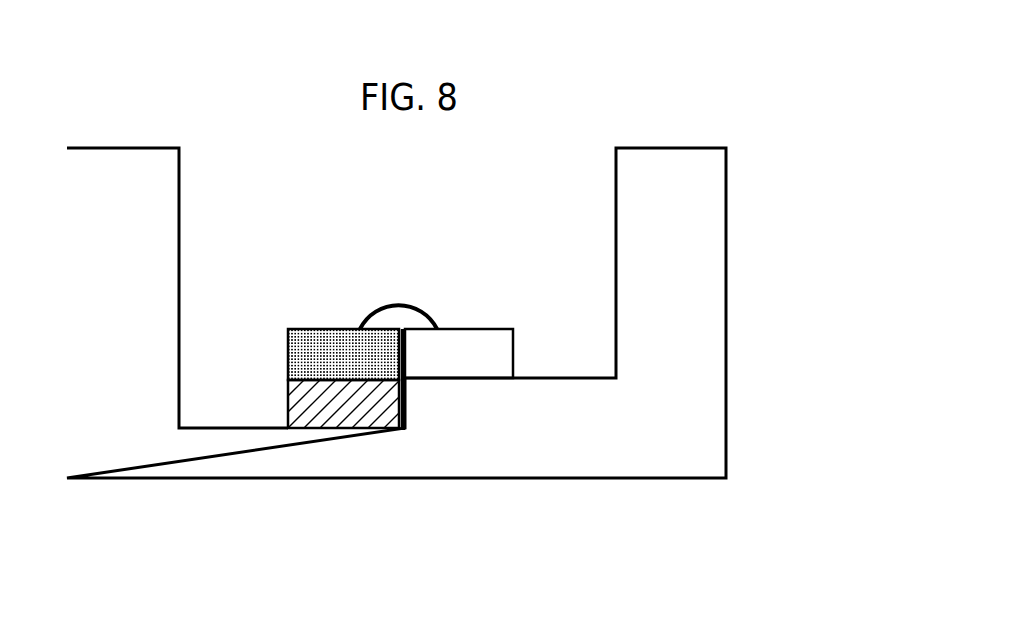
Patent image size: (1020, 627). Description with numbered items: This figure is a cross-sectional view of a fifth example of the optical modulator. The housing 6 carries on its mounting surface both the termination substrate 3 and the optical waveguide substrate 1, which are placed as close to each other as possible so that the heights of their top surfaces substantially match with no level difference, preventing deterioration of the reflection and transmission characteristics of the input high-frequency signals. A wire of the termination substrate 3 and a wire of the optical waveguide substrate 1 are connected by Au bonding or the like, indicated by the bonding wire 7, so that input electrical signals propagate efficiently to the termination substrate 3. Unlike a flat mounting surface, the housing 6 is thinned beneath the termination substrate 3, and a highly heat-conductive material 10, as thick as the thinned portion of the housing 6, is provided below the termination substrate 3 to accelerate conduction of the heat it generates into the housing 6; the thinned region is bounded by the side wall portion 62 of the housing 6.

The optical waveguide substrate 1 is at (488, 342).
The termination substrate 3 is at (316, 346).
The housing 6 is at (690, 397).
The bonding wire 7 is at (404, 305).
The highly heat-conductive material 10 is at (343, 405).
The side wall portion of recess 62 is at (414, 407).